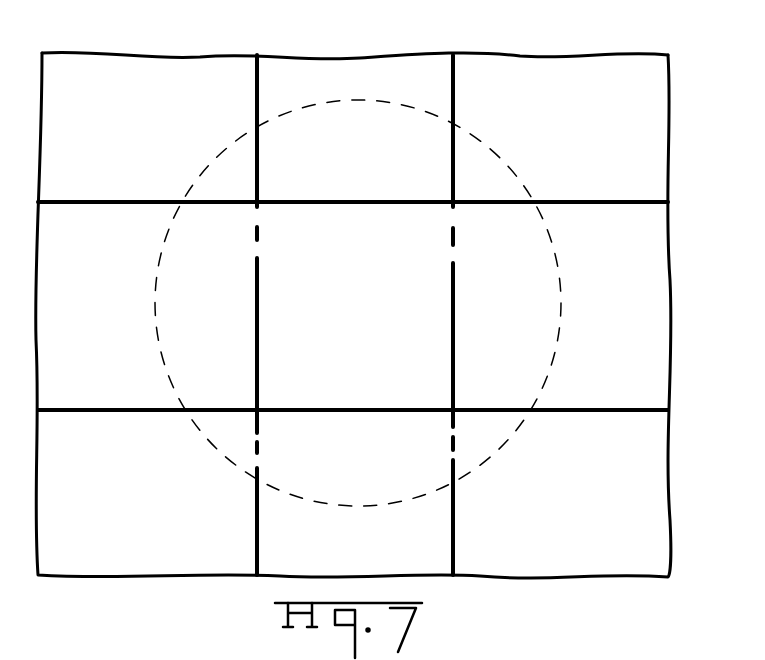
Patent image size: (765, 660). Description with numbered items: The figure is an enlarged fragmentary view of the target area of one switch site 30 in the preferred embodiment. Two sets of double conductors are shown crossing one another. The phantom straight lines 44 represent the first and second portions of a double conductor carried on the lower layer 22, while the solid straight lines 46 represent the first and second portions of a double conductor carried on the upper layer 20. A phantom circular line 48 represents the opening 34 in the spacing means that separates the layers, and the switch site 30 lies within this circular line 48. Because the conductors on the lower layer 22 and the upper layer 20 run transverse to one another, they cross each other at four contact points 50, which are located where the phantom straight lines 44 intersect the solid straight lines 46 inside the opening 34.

The upper layer 20 is at (652, 164).
The lower layer 22 is at (522, 48).
The switch site 30 is at (362, 302).
The opening 34 is at (170, 375).
The phantom straight lines 44 is at (259, 88).
The solid straight lines 46 is at (614, 203).
The phantom circular line 48 is at (155, 301).
The contact points 50 is at (260, 207).